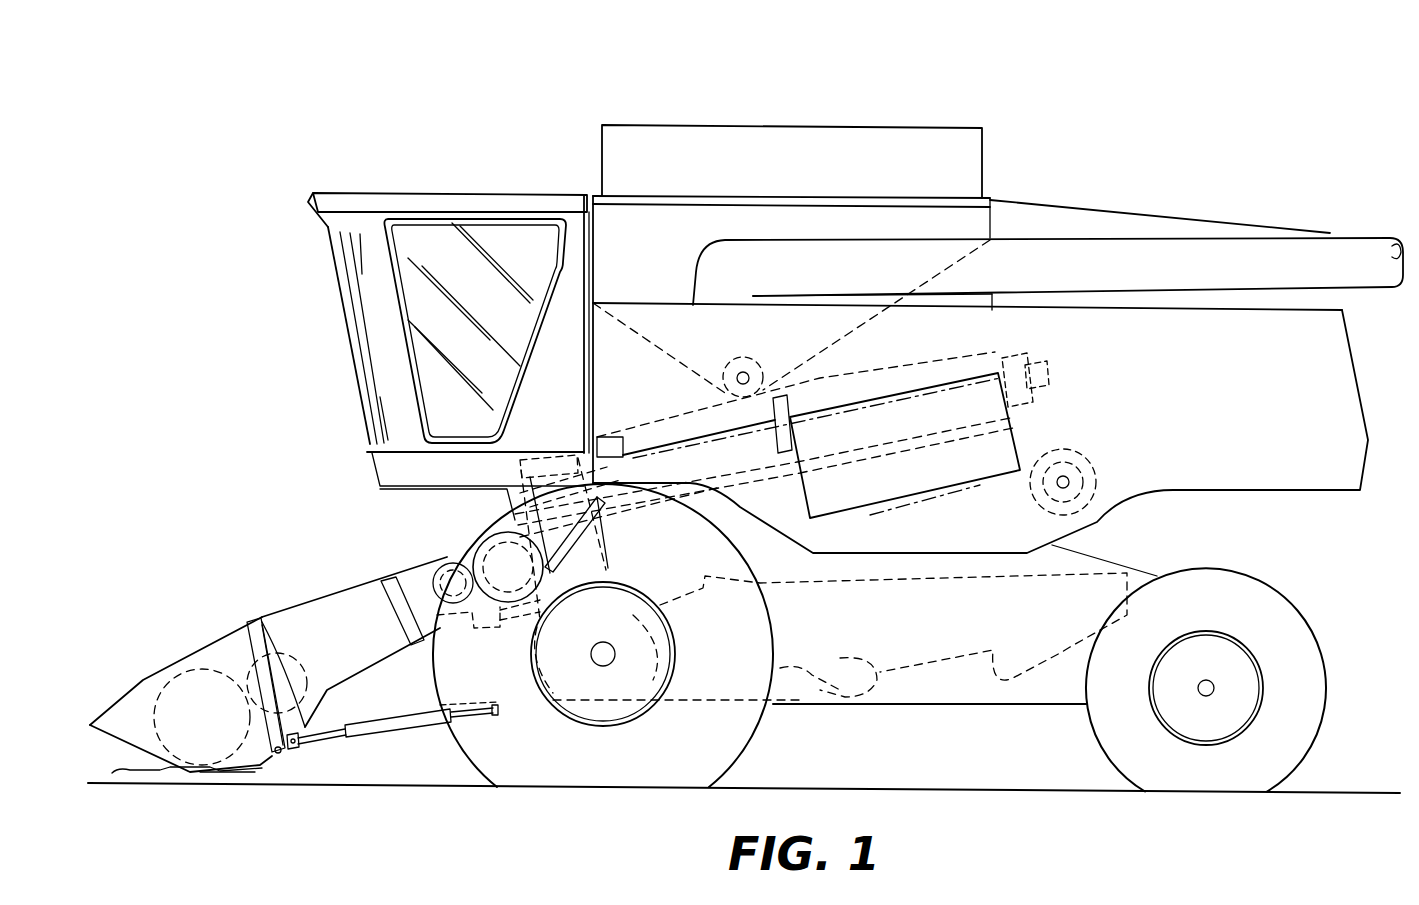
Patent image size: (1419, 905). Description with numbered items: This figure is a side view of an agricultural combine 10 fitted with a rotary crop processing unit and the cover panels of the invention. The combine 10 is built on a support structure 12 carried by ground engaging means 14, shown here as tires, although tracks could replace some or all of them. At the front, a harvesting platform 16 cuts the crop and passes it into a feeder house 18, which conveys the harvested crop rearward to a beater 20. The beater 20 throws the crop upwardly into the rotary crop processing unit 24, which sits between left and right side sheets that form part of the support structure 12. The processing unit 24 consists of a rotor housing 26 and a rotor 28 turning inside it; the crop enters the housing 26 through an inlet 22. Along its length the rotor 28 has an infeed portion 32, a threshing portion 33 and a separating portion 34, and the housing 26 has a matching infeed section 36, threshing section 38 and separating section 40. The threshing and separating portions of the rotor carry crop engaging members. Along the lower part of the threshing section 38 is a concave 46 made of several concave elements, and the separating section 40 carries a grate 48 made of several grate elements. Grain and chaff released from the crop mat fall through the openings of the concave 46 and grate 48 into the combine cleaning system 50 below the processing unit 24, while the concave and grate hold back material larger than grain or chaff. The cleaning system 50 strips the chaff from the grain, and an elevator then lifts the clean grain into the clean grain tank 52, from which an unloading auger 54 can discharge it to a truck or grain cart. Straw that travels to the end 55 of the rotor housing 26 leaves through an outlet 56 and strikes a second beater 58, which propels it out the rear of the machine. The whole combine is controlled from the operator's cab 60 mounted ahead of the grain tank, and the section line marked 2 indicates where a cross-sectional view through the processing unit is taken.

The section line 2- 2 is at (993, 317).
The agricultural combine 10 is at (1178, 92).
The support structure 12 is at (783, 571).
The ground engaging means 14 is at (1103, 745).
The harvesting platform 16 is at (148, 673).
The feeder house 18 is at (352, 597).
The beater 20 is at (474, 545).
The inlet 22 is at (513, 510).
The rotary crop processing unit 24 is at (887, 352).
The rotor housing 26 is at (940, 360).
The rotor 28 is at (998, 345).
The infeed portion 32 is at (577, 457).
The threshing portion 33 is at (620, 456).
The separating portion 34 is at (822, 360).
The infeed section 36 is at (521, 459).
The threshing section 38 is at (705, 413).
The separating section 40 is at (860, 368).
The concave 46 is at (705, 560).
The grate 48 is at (867, 485).
The combine cleaning system 50 is at (920, 577).
The clean grain tank 52 is at (668, 262).
The unloading auger 54 is at (1268, 277).
The end 55 is at (1023, 407).
The outlet 56 is at (1015, 435).
The beater 58 is at (1090, 463).
The operator's cab 60 is at (488, 299).